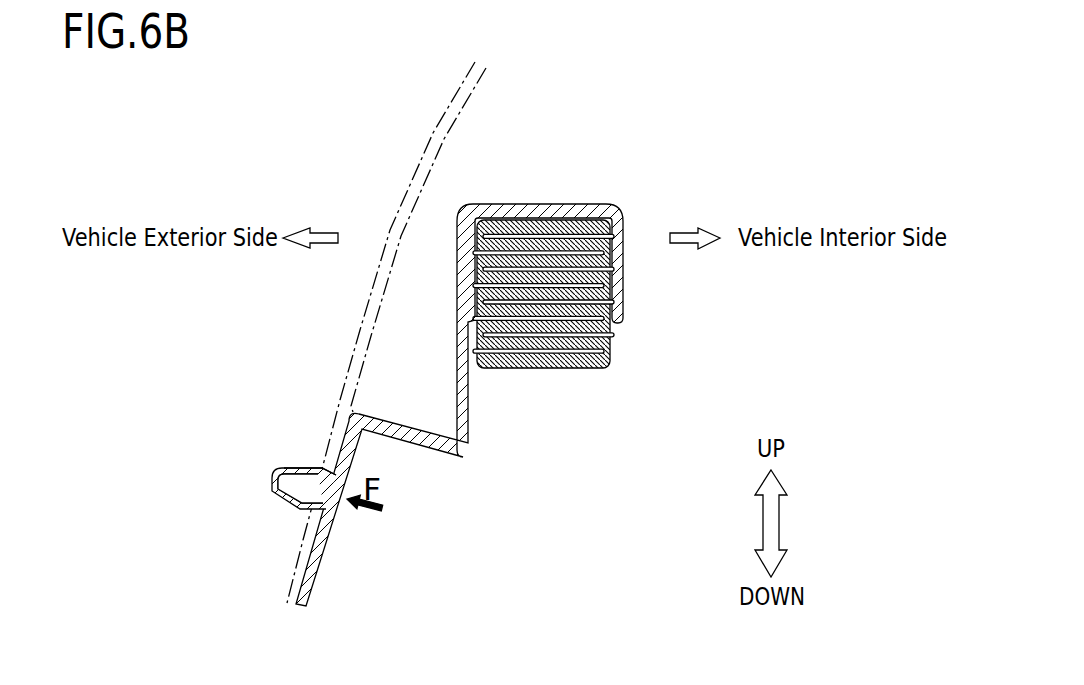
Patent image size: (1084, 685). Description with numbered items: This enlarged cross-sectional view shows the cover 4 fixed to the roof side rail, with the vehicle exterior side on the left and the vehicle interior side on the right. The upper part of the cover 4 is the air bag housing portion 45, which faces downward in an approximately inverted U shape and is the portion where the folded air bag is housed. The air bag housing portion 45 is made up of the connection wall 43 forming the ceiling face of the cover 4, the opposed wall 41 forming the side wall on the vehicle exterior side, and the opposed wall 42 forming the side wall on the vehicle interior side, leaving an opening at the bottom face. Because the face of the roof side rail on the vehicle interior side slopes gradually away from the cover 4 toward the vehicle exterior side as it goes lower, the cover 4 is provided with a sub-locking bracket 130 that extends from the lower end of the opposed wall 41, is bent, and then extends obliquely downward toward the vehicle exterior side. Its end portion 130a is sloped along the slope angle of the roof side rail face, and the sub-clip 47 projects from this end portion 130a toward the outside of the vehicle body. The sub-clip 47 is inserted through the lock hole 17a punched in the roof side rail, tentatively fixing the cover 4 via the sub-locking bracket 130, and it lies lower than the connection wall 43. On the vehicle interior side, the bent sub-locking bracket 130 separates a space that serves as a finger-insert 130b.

The cover 4 is at (622, 181).
The opposed wall 41 is at (458, 290).
The opposed wall 42 is at (616, 262).
The connection wall 43 is at (549, 206).
The air bag housing portion 45 is at (622, 317).
The sub-clip 47 is at (260, 462).
The lock hole 17a is at (304, 462).
The sub-locking bracket 130 is at (469, 417).
The end portion 130a is at (325, 546).
The finger-insert 130b is at (396, 512).